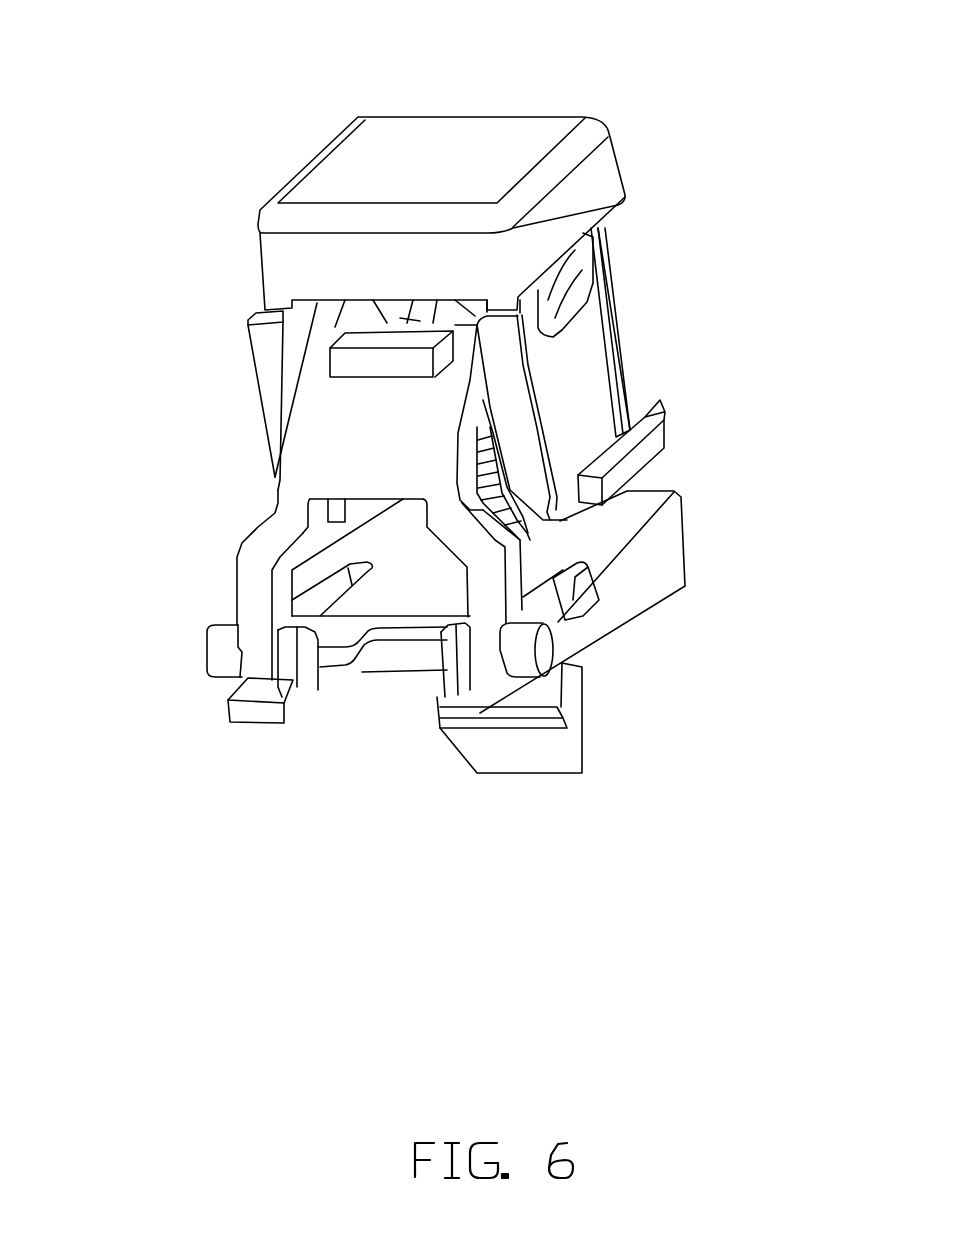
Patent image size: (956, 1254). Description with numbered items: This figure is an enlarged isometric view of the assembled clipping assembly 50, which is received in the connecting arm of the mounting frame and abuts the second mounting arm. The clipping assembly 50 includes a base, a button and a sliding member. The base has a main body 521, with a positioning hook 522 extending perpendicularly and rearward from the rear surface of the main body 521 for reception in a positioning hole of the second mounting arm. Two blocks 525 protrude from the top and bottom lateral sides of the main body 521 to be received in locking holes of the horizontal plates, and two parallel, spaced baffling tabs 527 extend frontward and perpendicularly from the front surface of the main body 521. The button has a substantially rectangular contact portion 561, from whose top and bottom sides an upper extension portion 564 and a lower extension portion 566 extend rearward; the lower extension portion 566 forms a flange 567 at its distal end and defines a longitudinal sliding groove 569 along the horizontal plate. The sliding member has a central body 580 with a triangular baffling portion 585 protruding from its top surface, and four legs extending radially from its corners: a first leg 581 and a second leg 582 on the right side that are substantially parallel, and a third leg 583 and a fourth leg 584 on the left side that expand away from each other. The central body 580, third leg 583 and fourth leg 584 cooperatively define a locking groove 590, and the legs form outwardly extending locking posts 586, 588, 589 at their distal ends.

The clipping assembly 50 is at (294, 34).
The contact portion 561 is at (515, 135).
The upper extension portion 564 is at (260, 318).
The second leg 582 is at (330, 305).
The baffling portion 585 is at (363, 367).
The central body 580 is at (355, 438).
The fourth leg 584 is at (268, 532).
The locking groove 590 is at (370, 514).
The third leg 583 is at (380, 628).
The locking post 589 is at (215, 652).
The locking post 588 is at (530, 645).
The baffling tabs 527 is at (470, 558).
The positioning hook 522 is at (540, 752).
The main body 521 is at (648, 560).
The blocks 525 is at (590, 612).
The flange 567 is at (646, 455).
The sliding groove 569 is at (578, 268).
The locking post 586 is at (560, 300).
The lower extension portion 566 is at (578, 397).
The first leg 581 is at (500, 330).